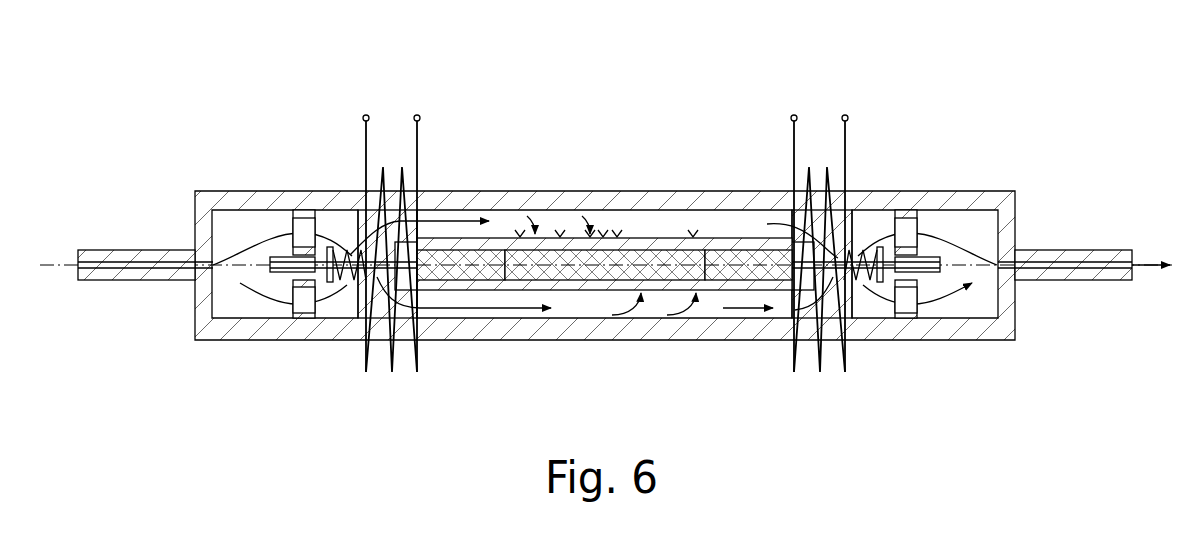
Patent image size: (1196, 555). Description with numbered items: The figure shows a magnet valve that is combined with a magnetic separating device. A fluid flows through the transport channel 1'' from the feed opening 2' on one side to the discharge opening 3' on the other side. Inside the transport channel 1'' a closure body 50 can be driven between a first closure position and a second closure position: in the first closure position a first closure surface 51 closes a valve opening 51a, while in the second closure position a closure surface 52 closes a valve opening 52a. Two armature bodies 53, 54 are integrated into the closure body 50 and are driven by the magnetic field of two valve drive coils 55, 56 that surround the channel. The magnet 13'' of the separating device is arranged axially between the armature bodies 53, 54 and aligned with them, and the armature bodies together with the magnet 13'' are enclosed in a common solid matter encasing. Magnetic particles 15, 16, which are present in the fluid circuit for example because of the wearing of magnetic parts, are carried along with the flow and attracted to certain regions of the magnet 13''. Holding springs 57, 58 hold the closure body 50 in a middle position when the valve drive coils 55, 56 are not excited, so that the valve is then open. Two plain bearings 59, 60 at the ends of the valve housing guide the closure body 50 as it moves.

The transport channel 1'' is at (604, 205).
The feed opening 2' is at (145, 222).
The discharge opening 3' is at (1084, 222).
The magnet 13'' is at (605, 200).
The particles 15 is at (560, 222).
The particles 16 is at (653, 290).
The closure body 50 is at (712, 226).
The first closure surface 51 is at (385, 245).
The valve opening 51a is at (383, 300).
The closure surface 52 is at (826, 245).
The valve opening 52a is at (810, 305).
The armature body 53 is at (463, 270).
The armature body 54 is at (732, 270).
The valve drive coil 55 is at (388, 122).
The valve drive coil 56 is at (818, 127).
The holding spring 57 is at (330, 283).
The holding spring 58 is at (878, 283).
The plain bearing 59 is at (298, 283).
The plain bearing 60 is at (920, 233).